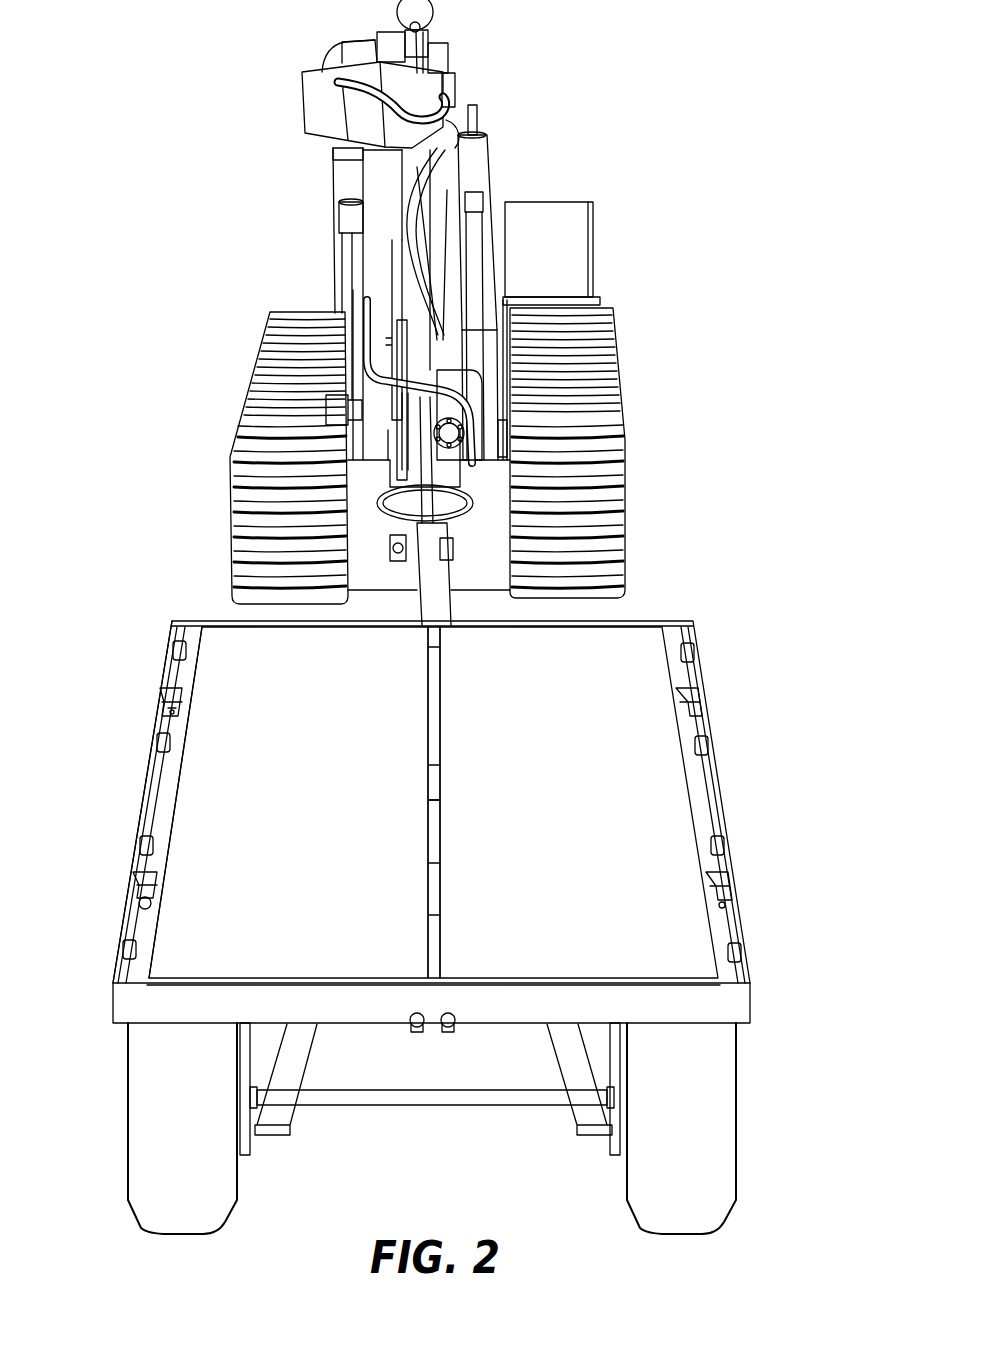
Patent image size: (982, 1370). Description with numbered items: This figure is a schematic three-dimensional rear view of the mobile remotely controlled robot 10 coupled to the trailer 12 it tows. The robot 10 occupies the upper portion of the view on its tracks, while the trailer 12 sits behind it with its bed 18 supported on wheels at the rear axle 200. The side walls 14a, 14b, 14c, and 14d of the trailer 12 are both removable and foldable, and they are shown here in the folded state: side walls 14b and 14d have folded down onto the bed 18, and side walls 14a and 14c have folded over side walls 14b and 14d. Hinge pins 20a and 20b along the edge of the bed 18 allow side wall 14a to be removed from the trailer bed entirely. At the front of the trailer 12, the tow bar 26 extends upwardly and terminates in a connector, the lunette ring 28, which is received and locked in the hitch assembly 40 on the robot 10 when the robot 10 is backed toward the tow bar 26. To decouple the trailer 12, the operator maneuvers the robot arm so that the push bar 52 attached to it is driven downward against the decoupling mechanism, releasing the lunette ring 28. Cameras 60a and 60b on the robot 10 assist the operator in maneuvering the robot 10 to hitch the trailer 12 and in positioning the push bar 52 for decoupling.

The robot 10 is at (638, 302).
The trailer 12 is at (742, 811).
The side wall 14a is at (288, 802).
The side wall 14b is at (431, 690).
The side wall 14c is at (579, 802).
The side wall 14d is at (437, 946).
The bed 18 is at (128, 960).
The hinge pin 20a is at (170, 690).
The hinge pin 20b is at (140, 893).
The tow bar 26 is at (440, 613).
The lunette ring 28 is at (380, 503).
The hitch assembly 40 is at (405, 452).
The push bar 52 is at (390, 325).
The camera 60a is at (397, 77).
The camera 60b is at (465, 440).
The rear axle 200 is at (430, 1097).